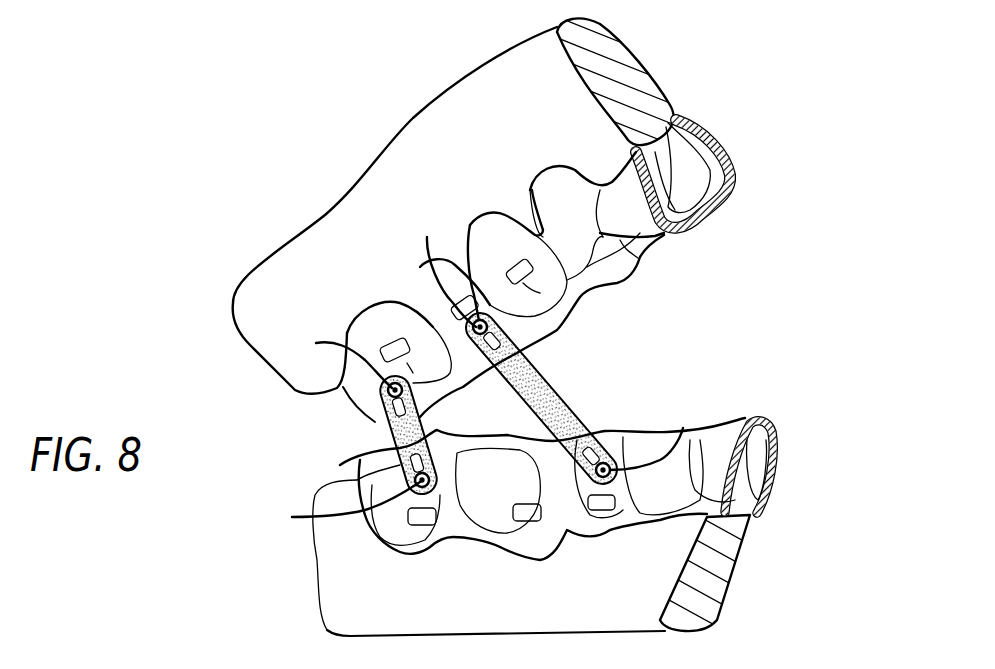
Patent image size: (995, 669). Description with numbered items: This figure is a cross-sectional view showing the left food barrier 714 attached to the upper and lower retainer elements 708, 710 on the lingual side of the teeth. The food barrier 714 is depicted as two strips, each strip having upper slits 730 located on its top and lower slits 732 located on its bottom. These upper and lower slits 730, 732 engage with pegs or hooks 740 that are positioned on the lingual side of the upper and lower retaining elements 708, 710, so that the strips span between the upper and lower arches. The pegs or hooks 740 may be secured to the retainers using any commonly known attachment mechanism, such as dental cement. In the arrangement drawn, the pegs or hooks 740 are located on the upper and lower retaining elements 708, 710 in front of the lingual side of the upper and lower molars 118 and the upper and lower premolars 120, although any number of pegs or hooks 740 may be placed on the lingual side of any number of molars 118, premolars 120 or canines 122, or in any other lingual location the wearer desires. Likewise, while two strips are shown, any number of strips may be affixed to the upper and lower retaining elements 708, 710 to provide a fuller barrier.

The molars 118 is at (377, 300).
The premolars 120 is at (422, 323).
The canines 122 is at (537, 170).
The upper retaining element 708 is at (735, 165).
The lower retaining element 710 is at (778, 460).
The food barrier 714 is at (556, 394).
The upper slits 730 is at (488, 312).
The lower slits 732 is at (603, 445).
The pegs or hooks 740 is at (478, 370).